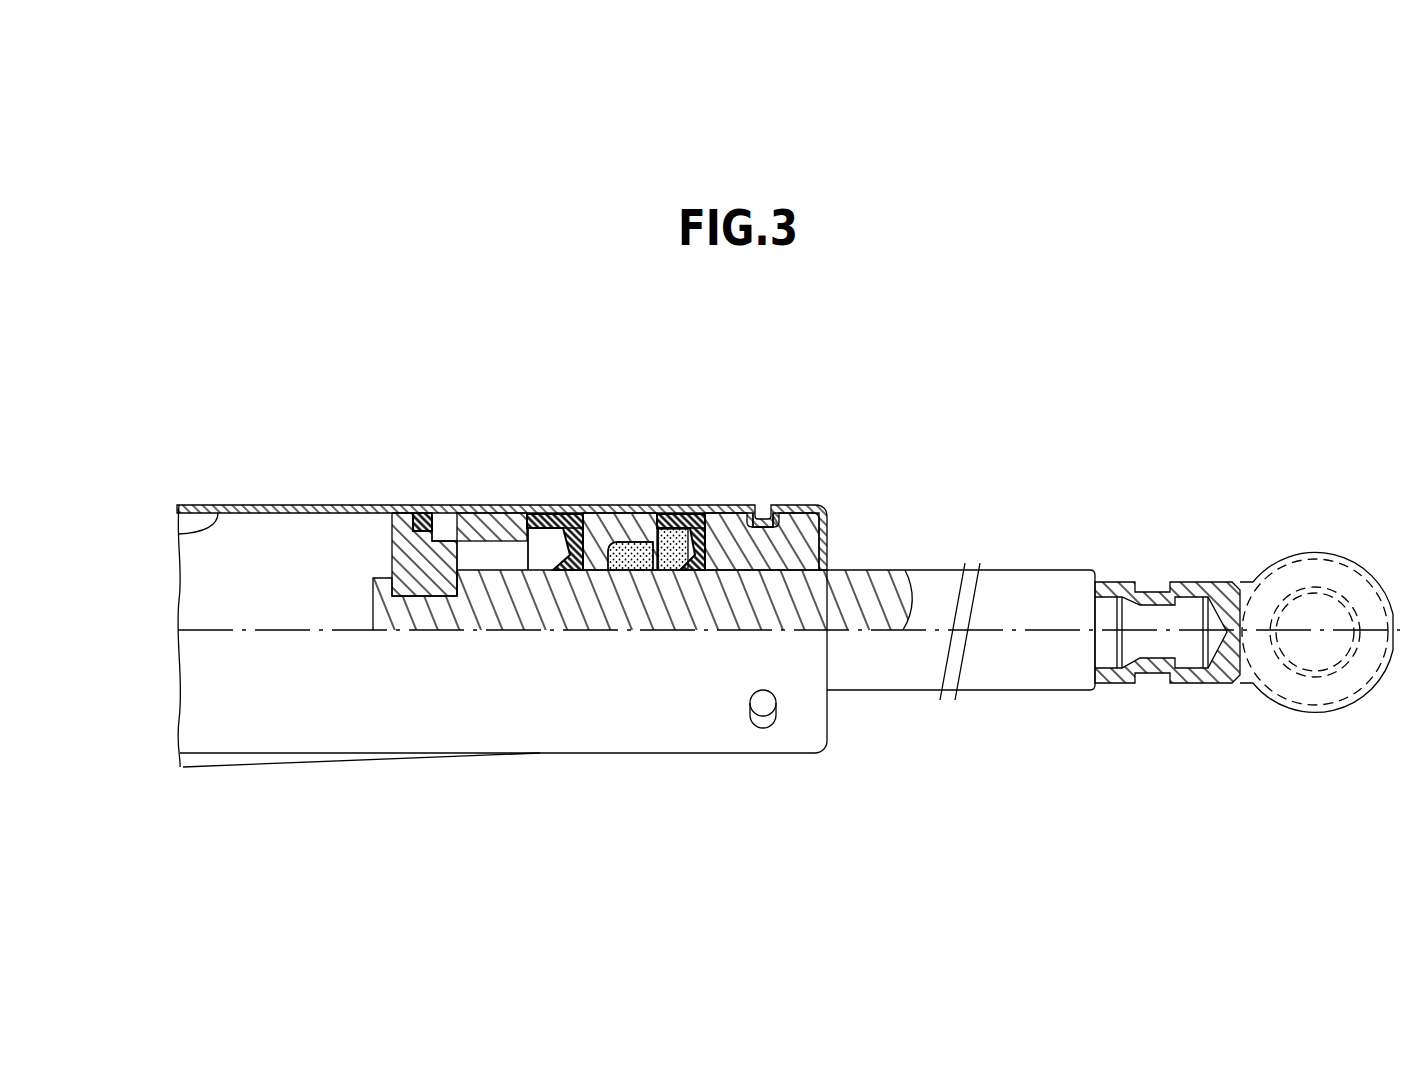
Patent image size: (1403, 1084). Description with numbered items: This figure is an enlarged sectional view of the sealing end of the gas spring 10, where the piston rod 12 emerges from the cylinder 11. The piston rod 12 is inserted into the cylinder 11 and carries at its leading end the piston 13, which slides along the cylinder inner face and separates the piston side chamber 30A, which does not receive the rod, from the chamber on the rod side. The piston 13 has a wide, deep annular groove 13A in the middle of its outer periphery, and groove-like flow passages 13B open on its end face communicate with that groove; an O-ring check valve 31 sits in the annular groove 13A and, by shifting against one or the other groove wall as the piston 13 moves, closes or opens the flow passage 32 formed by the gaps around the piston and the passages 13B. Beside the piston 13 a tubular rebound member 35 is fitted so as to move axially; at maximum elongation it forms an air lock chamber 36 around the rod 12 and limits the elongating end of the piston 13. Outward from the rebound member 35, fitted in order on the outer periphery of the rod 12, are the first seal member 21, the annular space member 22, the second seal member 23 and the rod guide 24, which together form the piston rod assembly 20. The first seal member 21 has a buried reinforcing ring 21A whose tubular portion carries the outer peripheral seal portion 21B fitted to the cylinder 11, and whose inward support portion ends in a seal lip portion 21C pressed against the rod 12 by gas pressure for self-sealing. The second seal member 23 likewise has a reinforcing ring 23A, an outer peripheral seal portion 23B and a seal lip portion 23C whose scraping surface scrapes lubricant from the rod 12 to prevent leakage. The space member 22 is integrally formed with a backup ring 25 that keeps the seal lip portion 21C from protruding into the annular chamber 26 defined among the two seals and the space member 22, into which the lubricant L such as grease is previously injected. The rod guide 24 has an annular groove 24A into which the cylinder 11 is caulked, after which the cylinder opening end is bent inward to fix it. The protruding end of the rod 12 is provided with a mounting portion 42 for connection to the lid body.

The gas spring 10 is at (880, 373).
The cylinder 11 is at (246, 503).
The piston rod 12 is at (946, 570).
The piston 13 is at (403, 548).
The annular groove 13A is at (430, 512).
The flow passage 13B is at (456, 512).
The piston rod assembly 20 is at (855, 560).
The first seal member 21 is at (561, 503).
The reinforcing ring 21A is at (550, 530).
The outer peripheral seal portion 21B is at (549, 503).
The seal lip portion 21C is at (586, 572).
The space member 22 is at (631, 523).
The second seal member 23 is at (692, 503).
The reinforcing ring 23A is at (712, 545).
The outer peripheral seal portion 23B is at (668, 510).
The seal lip portion 23C is at (707, 573).
The rod guide 24 is at (799, 523).
The annular groove 24A is at (769, 507).
The backup ring 25 is at (620, 560).
The annular chamber 26 is at (668, 570).
The piston side chamber 30A is at (200, 534).
The check valve 31 is at (427, 512).
The flow passage 32 is at (442, 535).
The rebound member 35 is at (496, 512).
The air lock chamber 36 is at (482, 566).
The mounting portion 42 is at (1352, 552).
The lubricant L is at (637, 572).